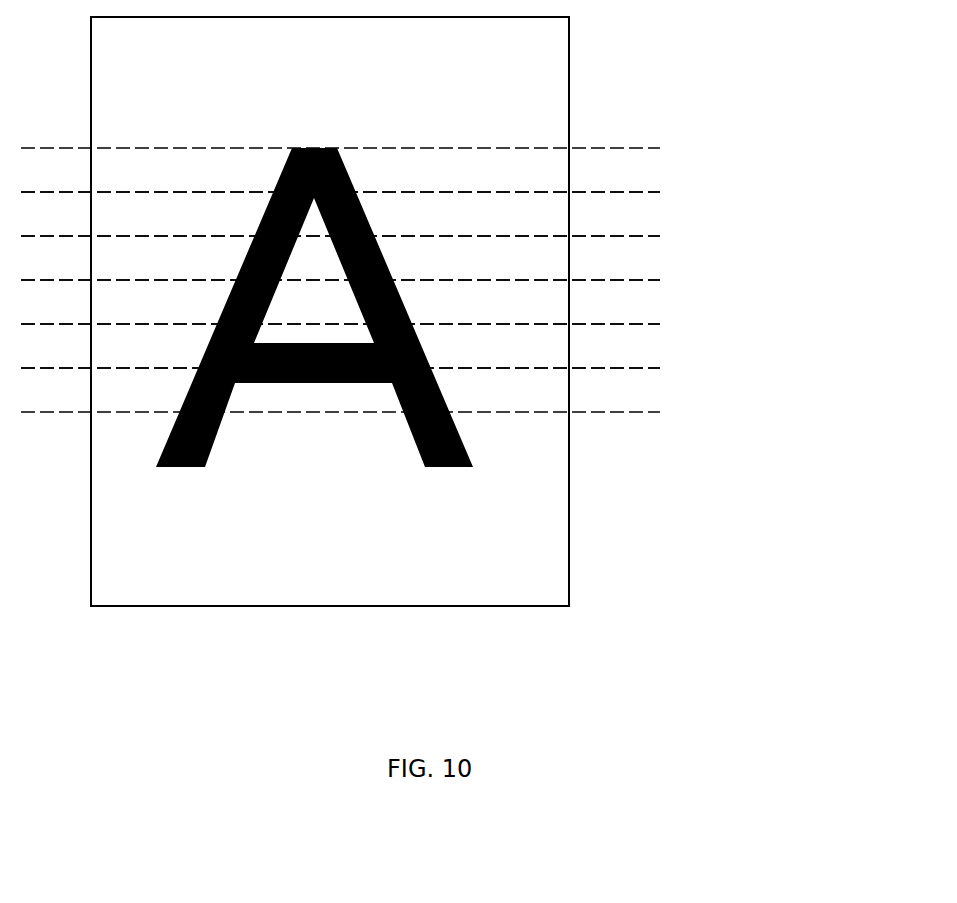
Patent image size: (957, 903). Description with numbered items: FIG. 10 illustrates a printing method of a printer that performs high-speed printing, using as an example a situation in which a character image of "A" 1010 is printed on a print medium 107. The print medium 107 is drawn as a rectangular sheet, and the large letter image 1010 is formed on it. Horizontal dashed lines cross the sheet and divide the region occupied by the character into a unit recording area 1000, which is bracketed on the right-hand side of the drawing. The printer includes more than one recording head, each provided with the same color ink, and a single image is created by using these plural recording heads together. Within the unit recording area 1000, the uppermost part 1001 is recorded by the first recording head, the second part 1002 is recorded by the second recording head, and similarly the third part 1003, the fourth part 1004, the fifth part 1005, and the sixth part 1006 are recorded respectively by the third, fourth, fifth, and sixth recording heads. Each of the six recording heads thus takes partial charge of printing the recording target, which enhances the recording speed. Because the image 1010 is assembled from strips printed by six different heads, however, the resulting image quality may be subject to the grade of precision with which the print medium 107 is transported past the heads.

The print medium 107 is at (569, 525).
The unit recording area 1000 is at (443, 280).
The uppermost part 1001 is at (660, 148).
The second part 1002 is at (660, 192).
The third part 1003 is at (660, 236).
The fourth part 1004 is at (660, 280).
The fifth part 1005 is at (660, 324).
The sixth part 1006 is at (387, 390).
The character (image) of "A" 1010 is at (448, 467).